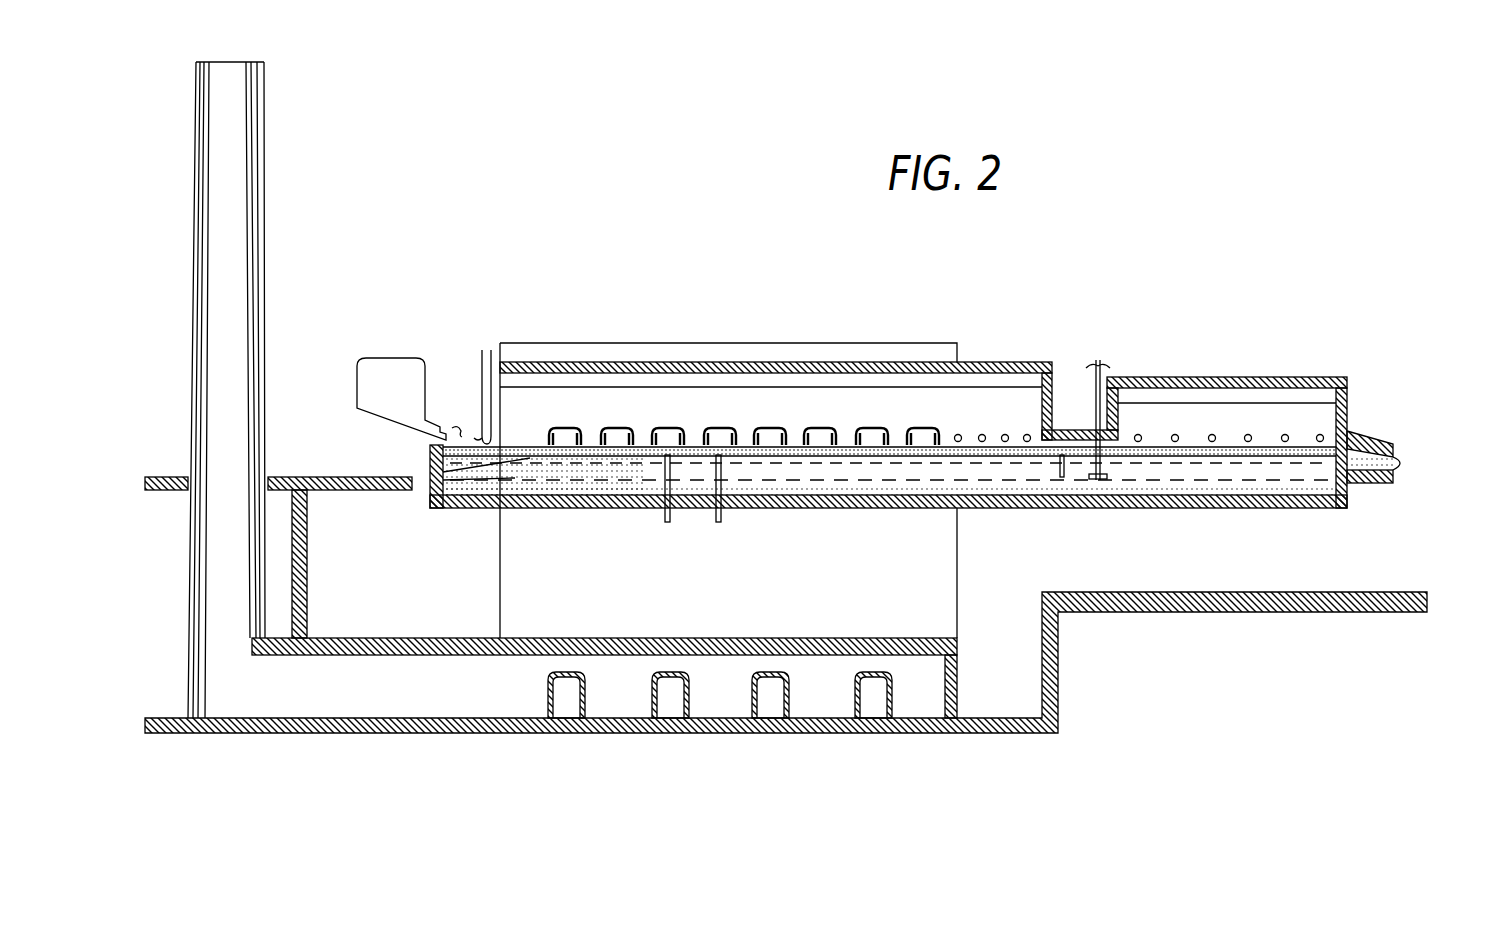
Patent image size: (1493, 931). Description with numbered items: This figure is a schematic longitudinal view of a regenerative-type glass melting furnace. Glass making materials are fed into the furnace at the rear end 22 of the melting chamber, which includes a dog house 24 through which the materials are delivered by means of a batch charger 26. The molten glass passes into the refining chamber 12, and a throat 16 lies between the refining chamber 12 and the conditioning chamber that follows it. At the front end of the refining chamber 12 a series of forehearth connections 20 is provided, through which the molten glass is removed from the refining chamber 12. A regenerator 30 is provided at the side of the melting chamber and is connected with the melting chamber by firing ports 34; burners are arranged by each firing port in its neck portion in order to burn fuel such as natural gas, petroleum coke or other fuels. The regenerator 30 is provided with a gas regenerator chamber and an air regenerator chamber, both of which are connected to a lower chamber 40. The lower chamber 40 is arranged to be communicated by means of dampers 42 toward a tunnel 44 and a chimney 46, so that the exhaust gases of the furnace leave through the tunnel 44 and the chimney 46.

The refining chamber 12 is at (989, 510).
The throat 16 is at (1082, 508).
The forehearth connections 20 is at (1393, 456).
The rear end 22 is at (430, 470).
The dog house 24 is at (465, 437).
The batch charger 26 is at (372, 387).
The regenerator 30 is at (960, 595).
The firing ports 34 is at (668, 432).
The lower chamber 40 is at (616, 693).
The dampers 42 is at (563, 695).
The tunnel 44 is at (325, 685).
The chimney 46 is at (222, 182).